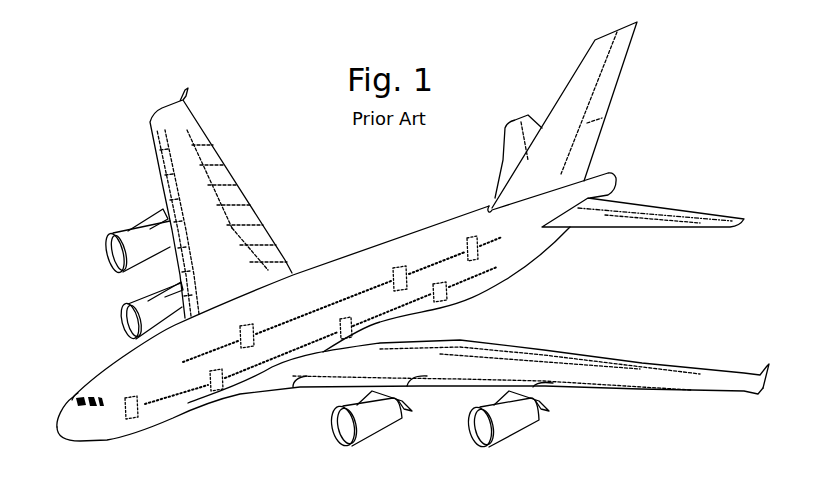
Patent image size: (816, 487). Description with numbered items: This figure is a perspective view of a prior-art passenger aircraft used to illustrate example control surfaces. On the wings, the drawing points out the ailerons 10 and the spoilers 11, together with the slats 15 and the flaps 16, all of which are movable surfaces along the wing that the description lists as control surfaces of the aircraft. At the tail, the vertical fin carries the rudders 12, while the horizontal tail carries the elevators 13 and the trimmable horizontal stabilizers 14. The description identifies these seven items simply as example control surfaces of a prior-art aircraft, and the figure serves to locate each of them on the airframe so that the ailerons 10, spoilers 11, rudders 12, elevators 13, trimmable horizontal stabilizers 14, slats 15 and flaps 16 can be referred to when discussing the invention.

The ailerons 10 is at (208, 139).
The spoilers 11 is at (232, 196).
The flaps 16 is at (268, 243).
The slats 15 is at (164, 185).
The rudders 12 is at (608, 82).
The elevators 13 is at (623, 208).
The trimmable horizontal stabilizers 14 is at (637, 222).